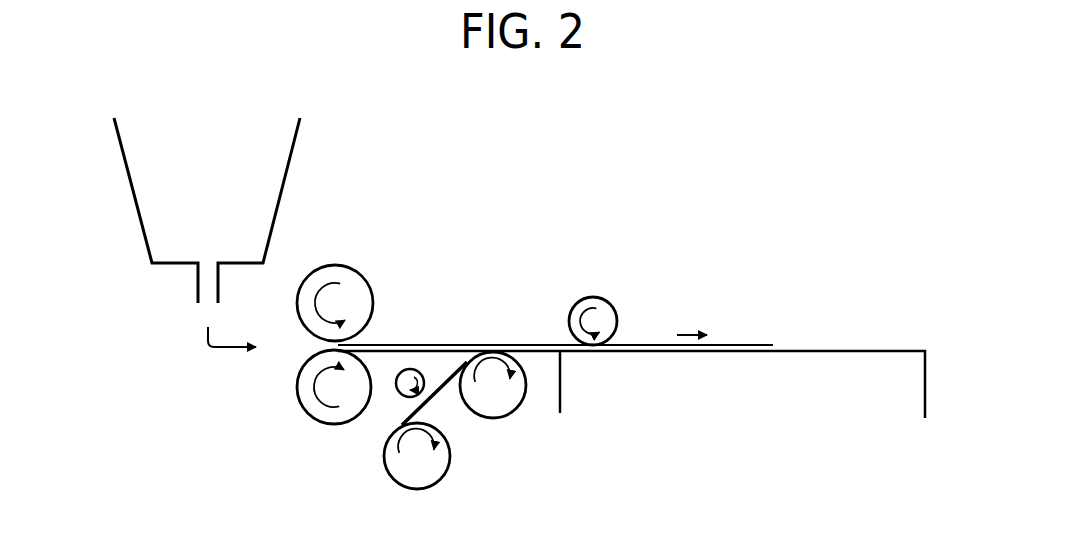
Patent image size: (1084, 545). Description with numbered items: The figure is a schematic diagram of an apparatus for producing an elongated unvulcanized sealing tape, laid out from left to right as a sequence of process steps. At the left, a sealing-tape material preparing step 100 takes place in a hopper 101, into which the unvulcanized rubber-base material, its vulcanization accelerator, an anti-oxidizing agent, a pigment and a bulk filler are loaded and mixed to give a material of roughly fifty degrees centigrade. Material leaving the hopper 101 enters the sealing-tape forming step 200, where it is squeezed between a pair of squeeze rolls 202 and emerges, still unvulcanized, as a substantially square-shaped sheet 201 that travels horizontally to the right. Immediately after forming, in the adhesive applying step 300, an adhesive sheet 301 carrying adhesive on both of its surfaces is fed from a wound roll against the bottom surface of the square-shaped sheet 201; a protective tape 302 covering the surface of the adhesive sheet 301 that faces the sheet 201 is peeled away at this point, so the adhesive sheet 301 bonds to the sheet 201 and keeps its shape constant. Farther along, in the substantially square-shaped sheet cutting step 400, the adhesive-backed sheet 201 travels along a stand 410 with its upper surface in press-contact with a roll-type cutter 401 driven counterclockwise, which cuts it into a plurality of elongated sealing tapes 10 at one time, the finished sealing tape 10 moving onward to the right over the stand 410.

The sealing-tape material preparing step 100 is at (308, 156).
The hopper 101 is at (143, 238).
The sealing-tape forming step 200 is at (365, 334).
The substantially square-shaped sheet 201 is at (437, 343).
The squeeze rolls 202 is at (345, 243).
The adhesive applying step 300 is at (429, 334).
The adhesive sheet 301 is at (438, 398).
The protective tape 302 is at (419, 400).
The substantially square-shaped sheet cutting step 400 is at (620, 262).
The roll-type cutter 401 is at (604, 305).
The sealing tape 10 is at (773, 344).
The stand 410 is at (887, 363).